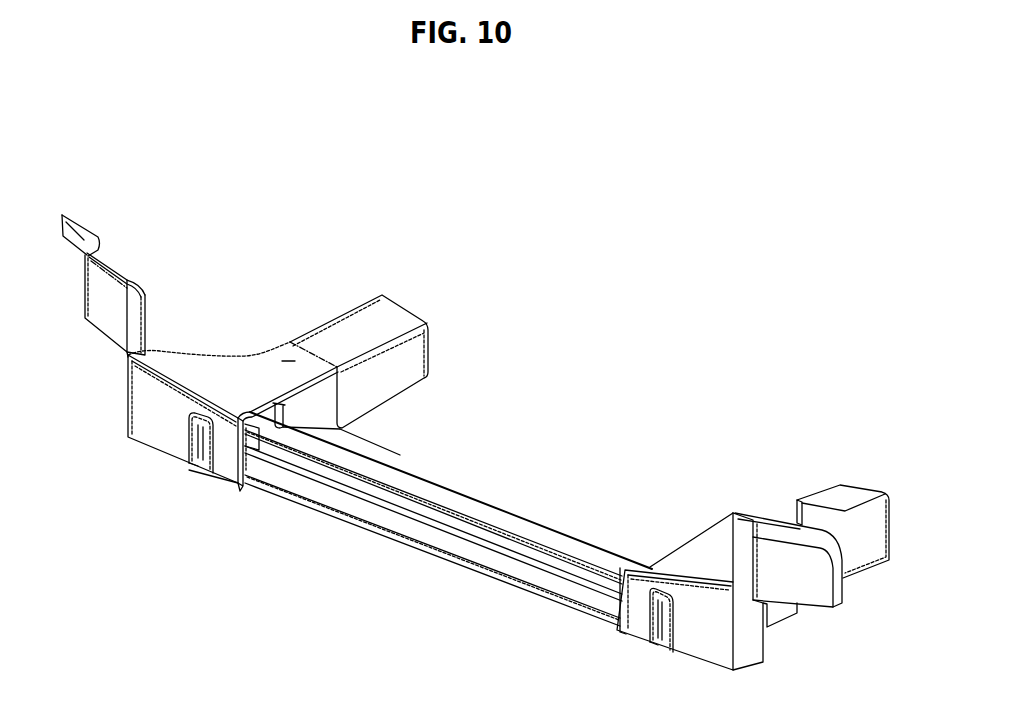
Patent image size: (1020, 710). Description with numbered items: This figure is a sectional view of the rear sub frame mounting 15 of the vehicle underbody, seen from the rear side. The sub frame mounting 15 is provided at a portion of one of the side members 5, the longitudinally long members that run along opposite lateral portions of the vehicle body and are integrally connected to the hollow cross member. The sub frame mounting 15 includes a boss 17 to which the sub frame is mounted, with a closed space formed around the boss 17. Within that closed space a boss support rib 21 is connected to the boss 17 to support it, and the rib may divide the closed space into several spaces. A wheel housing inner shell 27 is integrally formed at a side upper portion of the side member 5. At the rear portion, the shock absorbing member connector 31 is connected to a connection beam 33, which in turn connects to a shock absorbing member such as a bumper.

The side member 5 is at (251, 374).
The sub frame mounting 15 is at (201, 487).
The boss 17 is at (207, 445).
The boss support rib 21 is at (155, 406).
The wheel housing inner shell 27 is at (112, 262).
The shock absorbing member connector 31 is at (288, 361).
The connection beam 33 is at (375, 318).